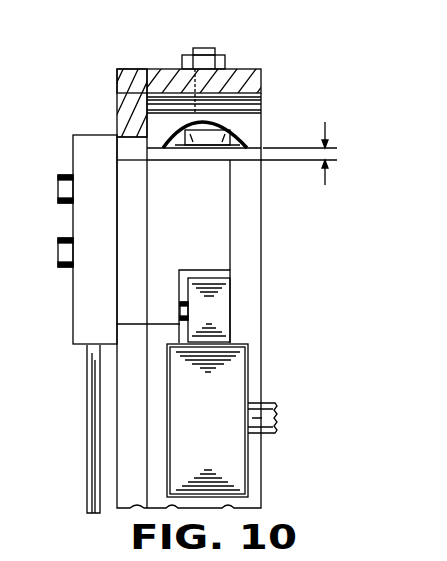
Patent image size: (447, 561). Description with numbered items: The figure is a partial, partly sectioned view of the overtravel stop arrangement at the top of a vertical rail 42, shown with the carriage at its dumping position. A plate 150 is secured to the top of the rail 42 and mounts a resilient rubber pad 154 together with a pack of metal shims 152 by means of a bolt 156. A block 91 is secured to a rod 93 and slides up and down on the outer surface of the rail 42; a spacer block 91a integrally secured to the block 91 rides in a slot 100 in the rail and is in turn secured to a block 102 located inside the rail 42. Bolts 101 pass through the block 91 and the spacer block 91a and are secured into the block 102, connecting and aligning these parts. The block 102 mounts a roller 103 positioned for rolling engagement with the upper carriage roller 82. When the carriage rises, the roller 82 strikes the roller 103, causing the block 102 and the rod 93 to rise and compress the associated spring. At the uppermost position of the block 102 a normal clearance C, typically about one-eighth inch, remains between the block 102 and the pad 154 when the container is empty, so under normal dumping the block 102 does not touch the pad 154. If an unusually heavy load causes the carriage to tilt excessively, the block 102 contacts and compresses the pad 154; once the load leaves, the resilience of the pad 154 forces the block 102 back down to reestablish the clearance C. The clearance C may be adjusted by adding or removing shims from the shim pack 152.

The vertical rail 42 is at (117, 96).
The roller 82 is at (230, 383).
The block 91 is at (73, 150).
The spacer block 91a is at (137, 209).
The rod 93 is at (92, 405).
The slot 100 is at (128, 147).
The bolts 101 is at (63, 202).
The block 102 is at (218, 223).
The roller 103 is at (225, 307).
The plate 150 is at (256, 78).
The pack of metal shims 152 is at (258, 103).
The resilient rubber pad 154 is at (262, 131).
The bolt 156 is at (213, 49).
The clearance C is at (325, 122).